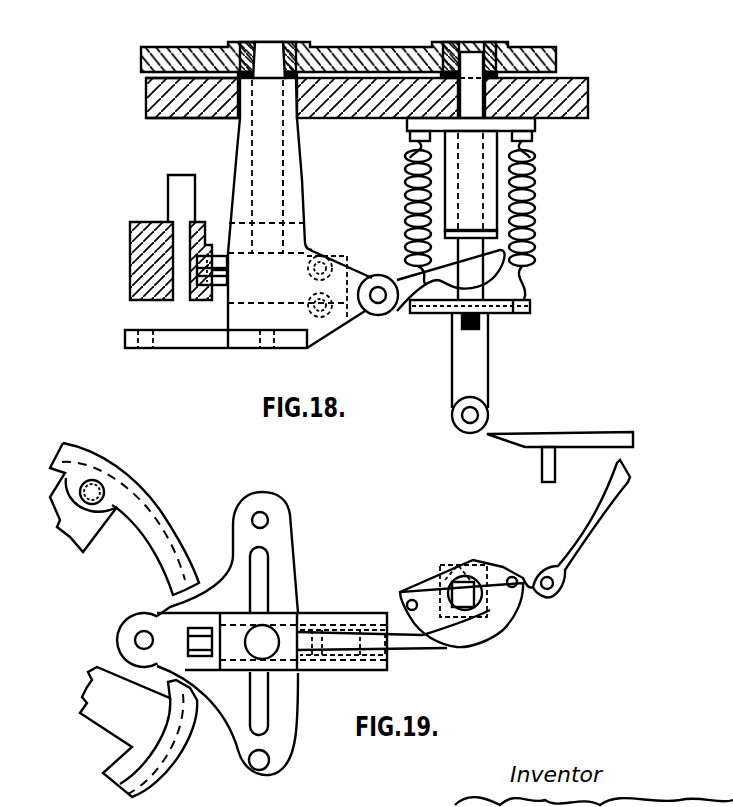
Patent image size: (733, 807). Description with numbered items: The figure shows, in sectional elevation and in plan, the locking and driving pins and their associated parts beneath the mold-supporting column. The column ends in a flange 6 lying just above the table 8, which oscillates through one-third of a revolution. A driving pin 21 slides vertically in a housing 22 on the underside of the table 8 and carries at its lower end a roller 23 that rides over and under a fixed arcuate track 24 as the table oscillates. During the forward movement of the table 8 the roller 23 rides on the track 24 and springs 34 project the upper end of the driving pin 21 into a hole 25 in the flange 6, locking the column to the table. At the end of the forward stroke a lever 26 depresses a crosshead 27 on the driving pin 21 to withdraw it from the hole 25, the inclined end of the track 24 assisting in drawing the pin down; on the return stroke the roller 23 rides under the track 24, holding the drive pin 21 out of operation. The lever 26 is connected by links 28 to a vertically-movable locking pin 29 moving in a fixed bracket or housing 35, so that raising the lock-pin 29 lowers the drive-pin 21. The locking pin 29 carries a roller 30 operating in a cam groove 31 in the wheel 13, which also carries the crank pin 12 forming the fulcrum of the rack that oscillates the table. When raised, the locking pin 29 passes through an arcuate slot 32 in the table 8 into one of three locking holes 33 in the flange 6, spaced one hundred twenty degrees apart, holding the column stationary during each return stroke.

In FIG. 18, the flange 6 is at (370, 47).
In FIG. 18, the table 8 is at (377, 118).
In FIG. 18, the crank pin 12 is at (172, 192).
In FIG. 19, the crank pin 12 is at (96, 486).
In FIG. 18, the wheel 13 is at (135, 295).
In FIG. 19, the wheel 13 is at (150, 522).
In FIG. 18, the driving pin 21 is at (472, 60).
In FIG. 19, the driving pin 21 is at (468, 582).
In FIG. 18, the housing 22 is at (472, 190).
In FIG. 18, the roller 23 is at (452, 415).
In FIG. 18, the fixed arcuate track 24 is at (543, 445).
In FIG. 19, the fixed arcuate track 24 is at (568, 540).
In FIG. 18, the hole 25 is at (460, 45).
In FIG. 18, the lever 26 is at (445, 280).
In FIG. 19, the lever 26 is at (403, 642).
In FIG. 18, the crosshead 27 is at (497, 308).
In FIG. 19, the crosshead 27 is at (507, 605).
In FIG. 18, the links 28 is at (330, 280).
In FIG. 19, the links 28 is at (336, 640).
In FIG. 18, the locking pin 29 is at (278, 180).
In FIG. 19, the locking pin 29 is at (266, 640).
In FIG. 18, the roller 30 is at (207, 290).
In FIG. 19, the roller 30 is at (185, 626).
In FIG. 18, the cam groove 31 is at (183, 298).
In FIG. 18, the arcuate slot 32 is at (232, 112).
In FIG. 18, the locking holes 33 is at (268, 55).
In FIG. 18, the springs 34 is at (405, 203).
In FIG. 18, the fixed bracket or housing 35 is at (292, 214).